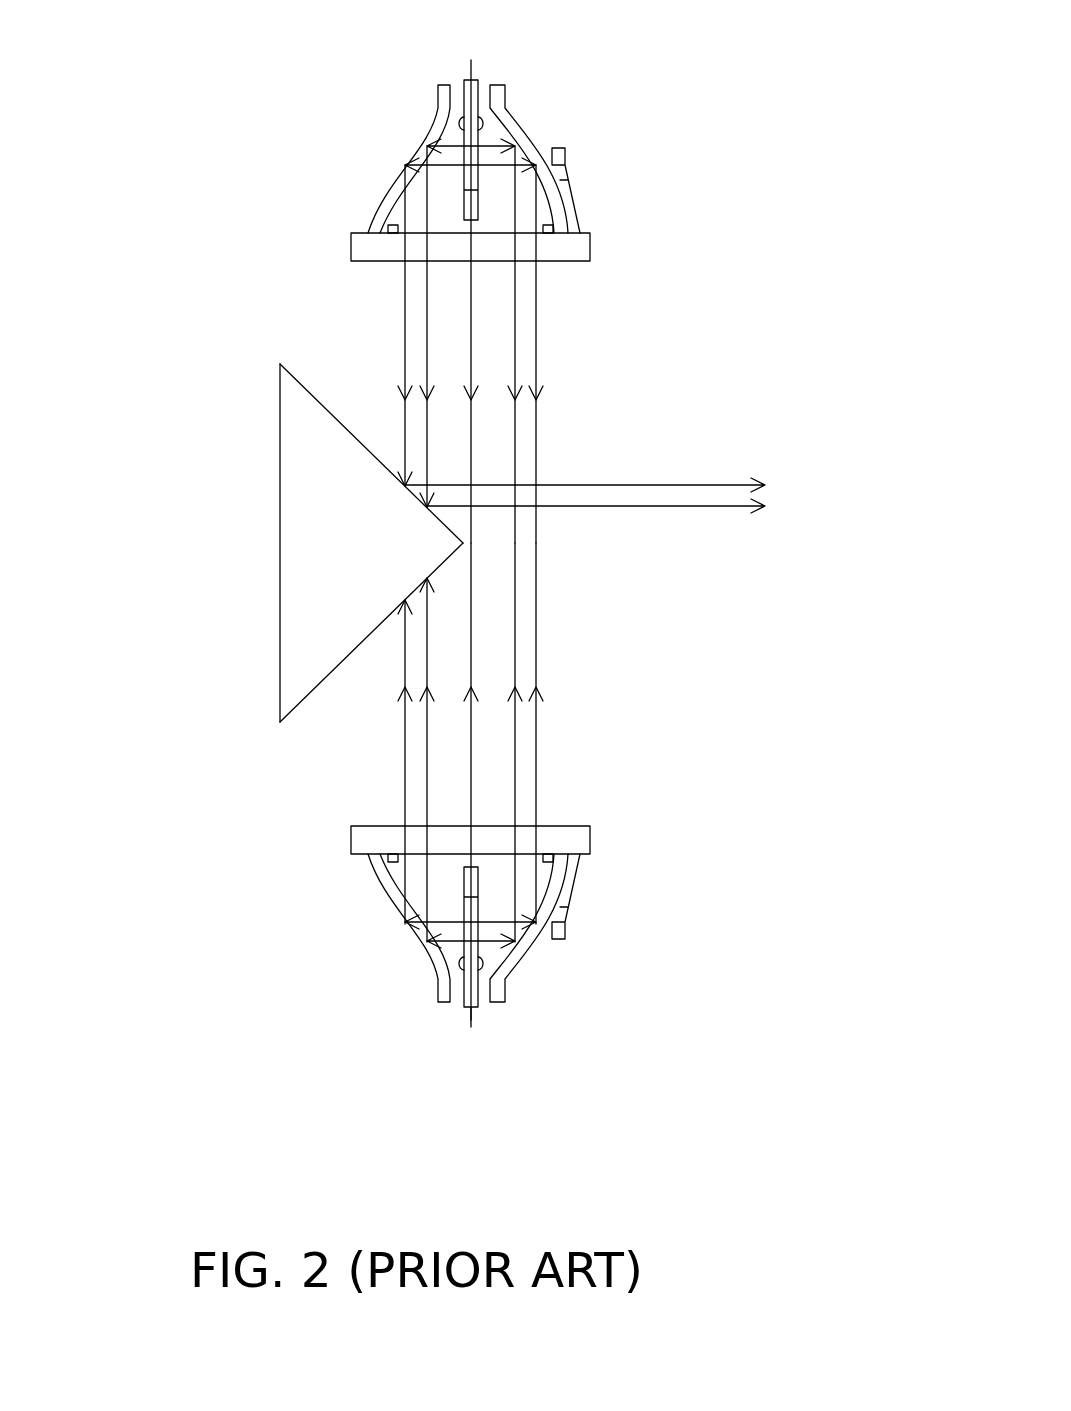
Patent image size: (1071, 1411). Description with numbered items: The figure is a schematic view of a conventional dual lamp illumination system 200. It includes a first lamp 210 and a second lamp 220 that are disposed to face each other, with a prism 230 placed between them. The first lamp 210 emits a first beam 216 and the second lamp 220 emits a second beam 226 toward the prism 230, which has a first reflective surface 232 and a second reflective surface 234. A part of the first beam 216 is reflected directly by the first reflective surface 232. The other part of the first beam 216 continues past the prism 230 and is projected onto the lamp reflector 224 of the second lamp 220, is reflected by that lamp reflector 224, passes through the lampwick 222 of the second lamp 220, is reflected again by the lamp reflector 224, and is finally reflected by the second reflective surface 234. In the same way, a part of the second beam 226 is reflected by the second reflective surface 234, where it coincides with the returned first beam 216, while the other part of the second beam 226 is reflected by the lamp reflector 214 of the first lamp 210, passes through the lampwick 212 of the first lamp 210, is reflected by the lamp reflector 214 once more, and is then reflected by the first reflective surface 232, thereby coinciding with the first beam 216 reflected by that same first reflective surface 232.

The dual lamp illumination system 200 is at (434, 591).
The first lamp 210 is at (526, 136).
The lampwick 212 is at (480, 123).
The lamp reflector 214 is at (510, 120).
The first beam 216 is at (405, 305).
The second lamp 220 is at (490, 983).
The lampwick 222 is at (479, 961).
The lamp reflector 224 is at (548, 915).
The second beam 226 is at (405, 790).
The prism 230 is at (283, 555).
The first reflective surface 232 is at (339, 401).
The second reflective surface 234 is at (351, 676).